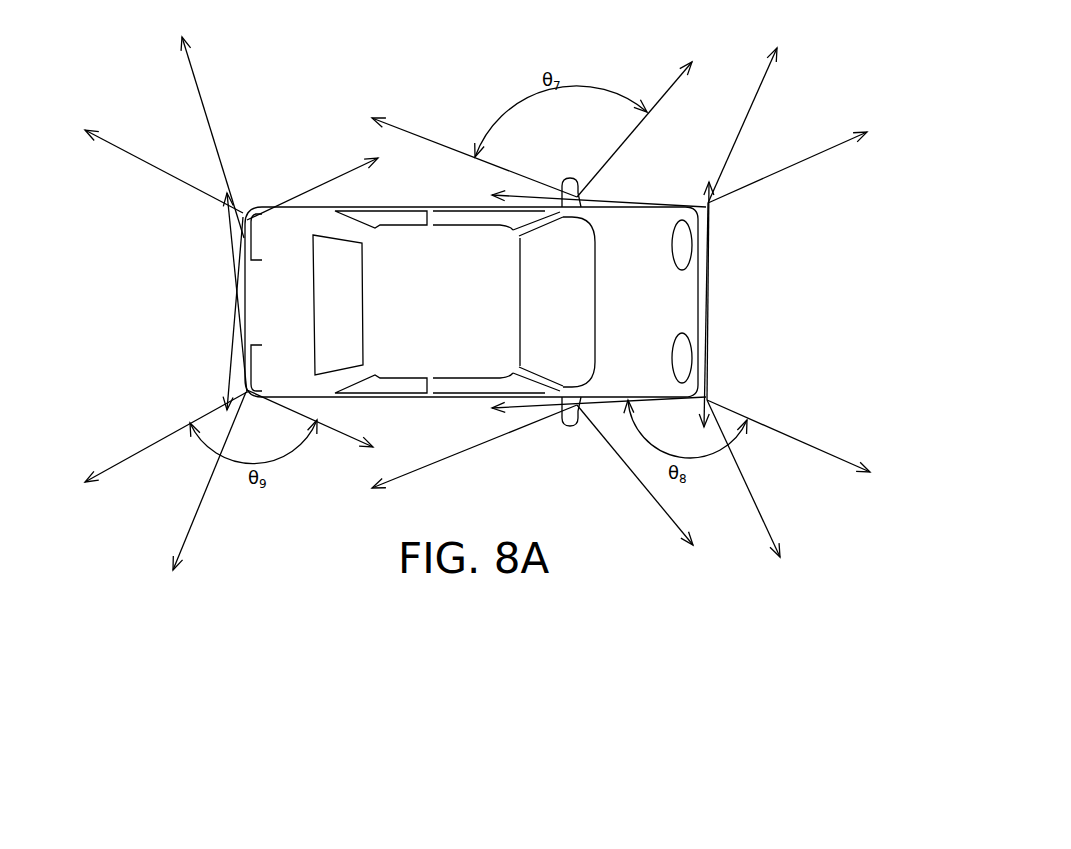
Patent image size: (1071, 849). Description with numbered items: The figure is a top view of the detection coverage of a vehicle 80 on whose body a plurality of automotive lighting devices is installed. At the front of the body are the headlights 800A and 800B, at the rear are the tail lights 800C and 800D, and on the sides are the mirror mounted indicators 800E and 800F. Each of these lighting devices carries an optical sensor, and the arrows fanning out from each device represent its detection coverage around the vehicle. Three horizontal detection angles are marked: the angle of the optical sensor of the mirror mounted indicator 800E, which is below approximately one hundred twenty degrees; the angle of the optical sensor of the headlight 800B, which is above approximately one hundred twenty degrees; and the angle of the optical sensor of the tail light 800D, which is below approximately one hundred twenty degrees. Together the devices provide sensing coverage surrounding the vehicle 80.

The vehicle 80 is at (102, 41).
The headlight 800A is at (703, 250).
The headlight 800B is at (703, 360).
The tail light 800C is at (243, 249).
The tail light 800D is at (243, 357).
The mirror mounted indicator 800E is at (569, 183).
The mirror mounted indicator 800F is at (569, 425).